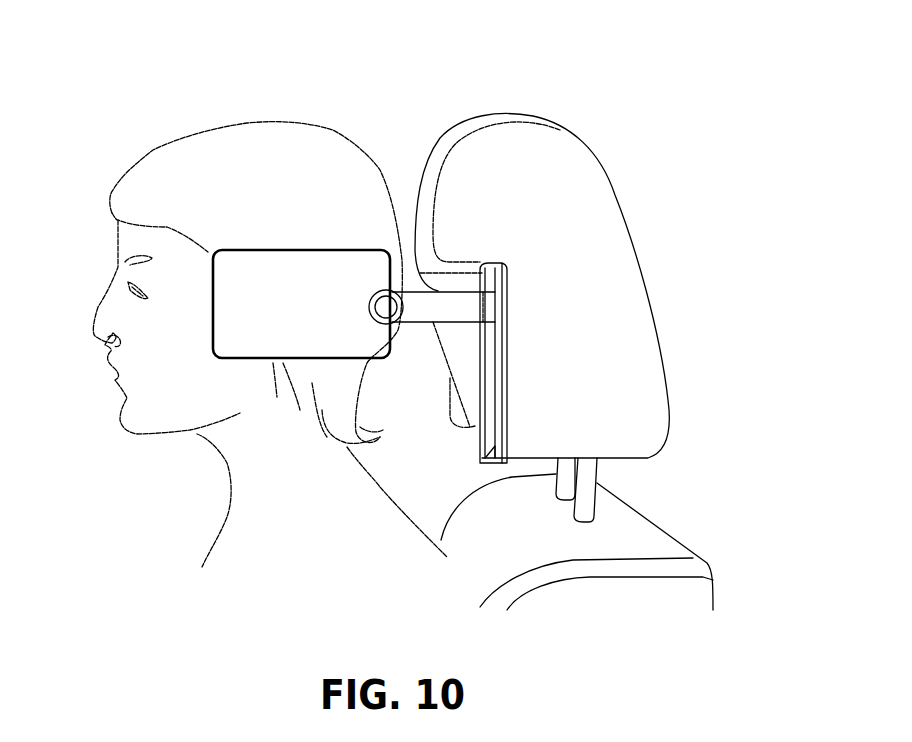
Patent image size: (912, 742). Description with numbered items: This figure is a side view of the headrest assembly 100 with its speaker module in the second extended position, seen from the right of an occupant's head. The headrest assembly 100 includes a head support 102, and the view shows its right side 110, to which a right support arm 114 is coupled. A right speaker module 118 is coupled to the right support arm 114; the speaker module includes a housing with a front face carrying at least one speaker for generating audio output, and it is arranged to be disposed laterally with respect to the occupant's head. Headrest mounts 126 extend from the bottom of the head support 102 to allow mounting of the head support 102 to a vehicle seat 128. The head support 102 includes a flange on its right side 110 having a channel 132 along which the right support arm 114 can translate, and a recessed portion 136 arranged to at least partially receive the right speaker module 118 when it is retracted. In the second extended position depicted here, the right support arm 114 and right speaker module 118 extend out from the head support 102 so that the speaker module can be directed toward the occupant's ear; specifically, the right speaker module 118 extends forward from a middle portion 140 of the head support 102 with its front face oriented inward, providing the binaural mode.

The headrest assembly 100 is at (578, 91).
The head support 102 is at (612, 207).
The right side 110 is at (533, 180).
The right support arm 114 is at (460, 312).
The right speaker module 118 is at (328, 250).
The headrest mounts 126 is at (598, 476).
The vehicle seat 128 is at (673, 532).
The channel 132 is at (492, 410).
The recessed portion 136 is at (462, 364).
The middle portion 140 is at (507, 310).